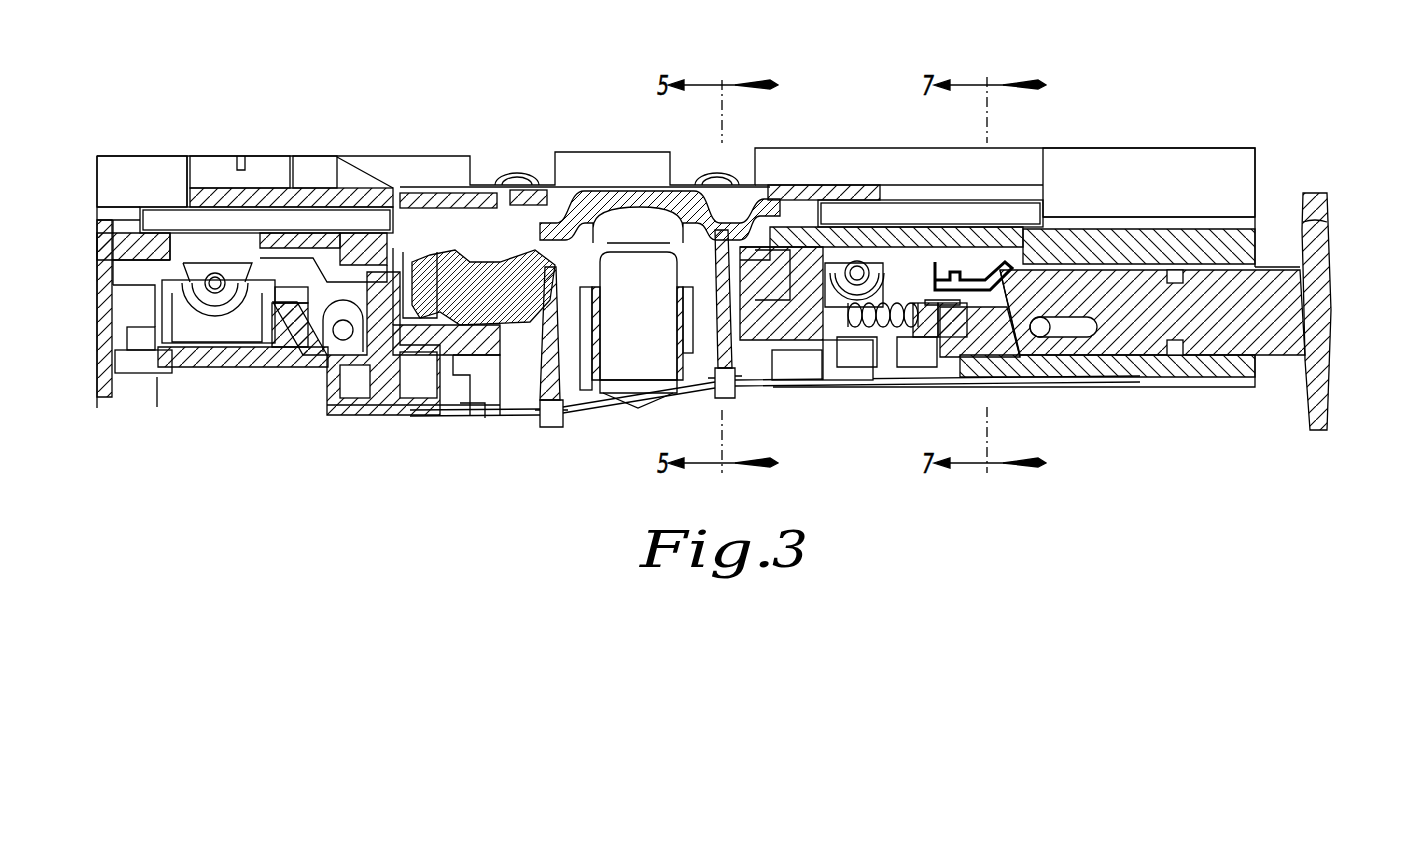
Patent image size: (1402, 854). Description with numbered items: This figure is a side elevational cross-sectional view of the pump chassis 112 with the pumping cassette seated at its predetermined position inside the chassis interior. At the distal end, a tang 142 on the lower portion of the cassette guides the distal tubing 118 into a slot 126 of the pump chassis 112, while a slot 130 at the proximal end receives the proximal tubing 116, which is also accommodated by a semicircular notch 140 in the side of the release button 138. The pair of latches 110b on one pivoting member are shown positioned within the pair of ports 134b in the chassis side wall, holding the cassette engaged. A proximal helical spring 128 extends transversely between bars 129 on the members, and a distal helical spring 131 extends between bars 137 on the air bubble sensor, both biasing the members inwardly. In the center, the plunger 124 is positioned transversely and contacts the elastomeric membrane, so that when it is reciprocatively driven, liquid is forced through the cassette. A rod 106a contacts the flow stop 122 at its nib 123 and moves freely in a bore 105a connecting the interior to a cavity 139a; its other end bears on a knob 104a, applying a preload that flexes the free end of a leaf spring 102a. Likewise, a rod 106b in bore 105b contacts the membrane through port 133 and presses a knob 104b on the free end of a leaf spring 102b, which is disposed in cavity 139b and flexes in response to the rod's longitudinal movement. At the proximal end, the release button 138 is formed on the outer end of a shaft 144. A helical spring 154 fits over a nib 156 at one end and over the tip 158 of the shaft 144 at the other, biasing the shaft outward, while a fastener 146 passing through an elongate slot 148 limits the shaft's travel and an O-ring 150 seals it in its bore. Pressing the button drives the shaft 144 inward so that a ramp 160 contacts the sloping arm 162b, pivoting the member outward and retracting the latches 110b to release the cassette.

The pump chassis 112 is at (1252, 76).
The slot 126 is at (147, 168).
The distal tubing 118 is at (147, 208).
The tang 142 is at (290, 157).
The bore 105a is at (462, 225).
The latches 110b is at (510, 177).
The ports 134b is at (500, 177).
The nib 123 is at (545, 295).
The port 133 is at (743, 267).
The bore 105b is at (763, 270).
The proximal tubing 116 is at (1023, 200).
The slot 130 is at (1140, 157).
The proximal helical spring 128 is at (860, 271).
The bars 129 is at (880, 273).
The arm 162b is at (1007, 270).
The semicircular notch 140 is at (1317, 200).
The release button 138 is at (1317, 267).
The distal helical spring 131 is at (217, 293).
The bars 137 is at (215, 292).
The leaf spring 102a is at (467, 380).
The flow stop 122 is at (510, 323).
The knob 104a is at (553, 400).
The cavity 139a is at (467, 410).
The plunger 124 is at (617, 367).
The rod 106a is at (558, 375).
The rod 106b is at (715, 337).
The knob 104b is at (730, 398).
The cavity 139b is at (807, 367).
The leaf spring 102b is at (793, 377).
The nib 156 is at (847, 320).
The helical spring 154 is at (897, 320).
The tip 158 is at (943, 320).
The ramp 160 is at (1003, 290).
The fastener 146 is at (1037, 335).
The slot 148 is at (1087, 332).
The O-ring 150 is at (1177, 353).
The shaft 144 is at (1253, 340).